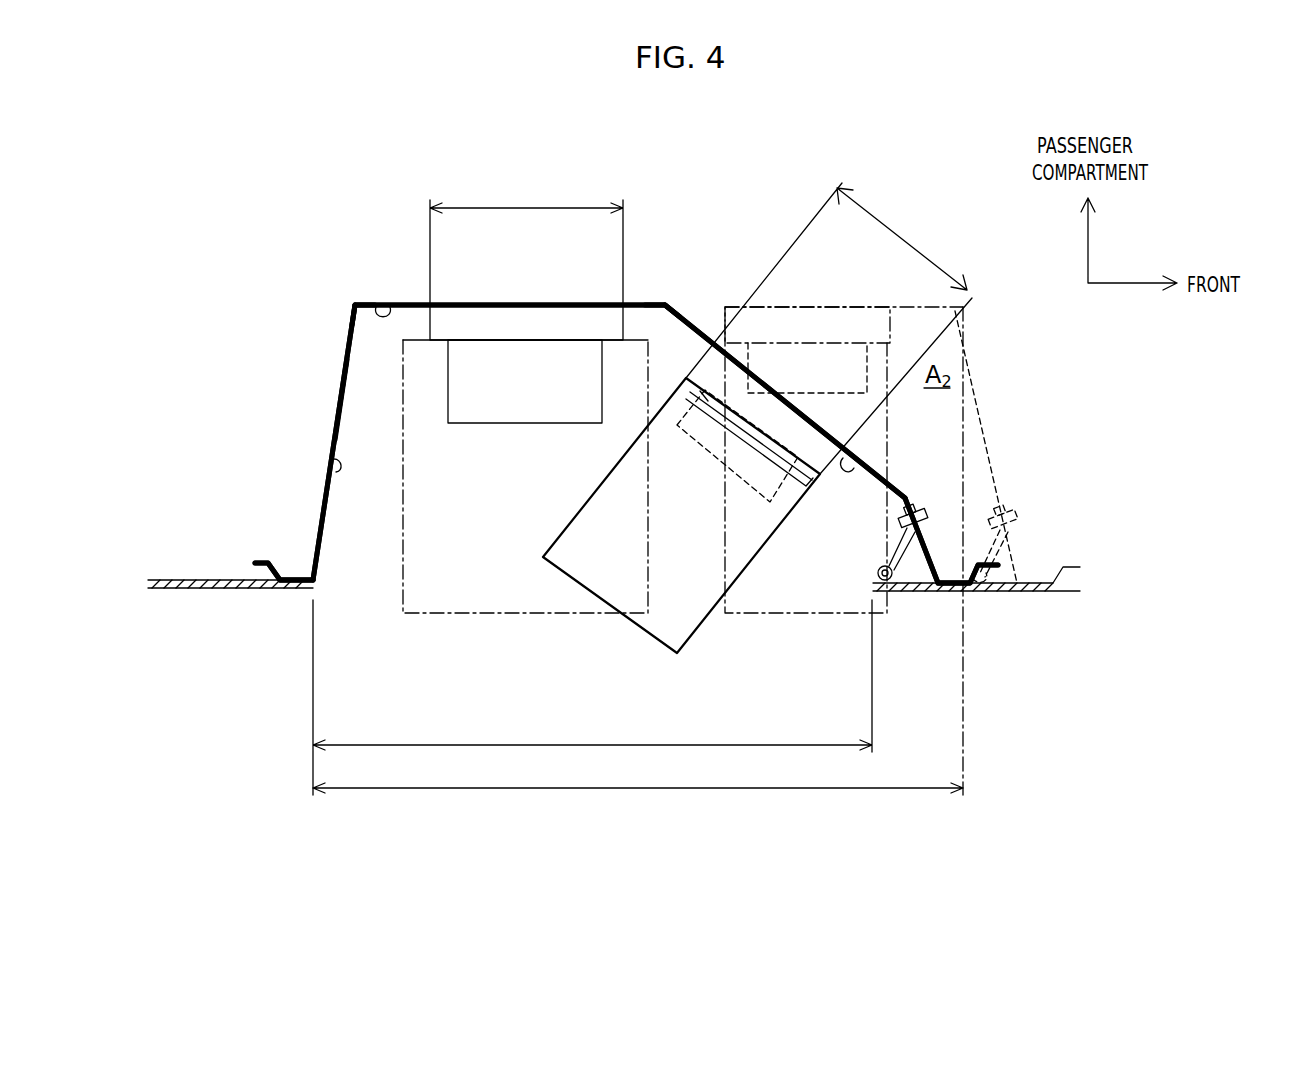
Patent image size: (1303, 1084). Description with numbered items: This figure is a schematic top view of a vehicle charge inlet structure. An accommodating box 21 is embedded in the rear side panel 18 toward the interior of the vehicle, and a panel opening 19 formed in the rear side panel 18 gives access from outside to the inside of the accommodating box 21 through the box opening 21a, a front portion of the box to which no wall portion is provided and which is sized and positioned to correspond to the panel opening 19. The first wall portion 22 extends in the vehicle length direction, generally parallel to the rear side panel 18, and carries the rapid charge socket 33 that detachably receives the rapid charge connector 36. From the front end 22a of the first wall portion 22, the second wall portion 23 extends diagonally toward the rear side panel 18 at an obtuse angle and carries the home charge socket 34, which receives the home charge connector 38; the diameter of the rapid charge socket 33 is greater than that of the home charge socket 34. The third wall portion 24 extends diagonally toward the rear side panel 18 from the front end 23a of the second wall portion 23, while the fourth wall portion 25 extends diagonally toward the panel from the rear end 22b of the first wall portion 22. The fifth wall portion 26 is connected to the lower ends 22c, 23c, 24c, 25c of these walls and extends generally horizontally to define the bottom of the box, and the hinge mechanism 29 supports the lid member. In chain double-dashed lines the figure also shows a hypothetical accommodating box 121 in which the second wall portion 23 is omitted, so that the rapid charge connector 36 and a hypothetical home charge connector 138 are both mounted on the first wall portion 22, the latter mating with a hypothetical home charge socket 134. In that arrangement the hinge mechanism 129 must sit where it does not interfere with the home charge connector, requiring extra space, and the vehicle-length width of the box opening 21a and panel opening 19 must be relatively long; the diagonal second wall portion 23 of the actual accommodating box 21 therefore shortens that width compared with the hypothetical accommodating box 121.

The rear side panel 18 is at (220, 590).
The panel opening 19 is at (376, 603).
The accommodating box 21 is at (305, 326).
The box opening 21a is at (380, 567).
The first wall portion 22 is at (489, 303).
The front end of the first wall portion 22a is at (665, 303).
The rear end of the first wall portion 22b is at (355, 303).
The lower end of the first wall portion 22c is at (396, 303).
The second wall portion 23 is at (698, 330).
The front end of the second wall portion 23a is at (909, 497).
The lower end of the second wall portion 23c is at (852, 464).
The third wall portion 24 is at (930, 548).
The lower end of the third wall portion 24c is at (923, 570).
The fourth wall portion 25 is at (322, 505).
The lower end of the fourth wall portion 25c is at (330, 463).
The fifth wall portion 26 is at (366, 410).
The hinge mechanism 29 is at (866, 566).
The rapid charge socket 33 is at (557, 318).
The home charge socket 34 is at (703, 370).
The rapid charge connector 36 is at (455, 603).
The home charge connector 38 is at (692, 635).
The hypothetical accommodating box 121 is at (985, 372).
The hinge mechanism 129 is at (1018, 555).
The hypothetical home charge socket 134 is at (841, 325).
The hypothetical home charge connector 138 is at (816, 603).